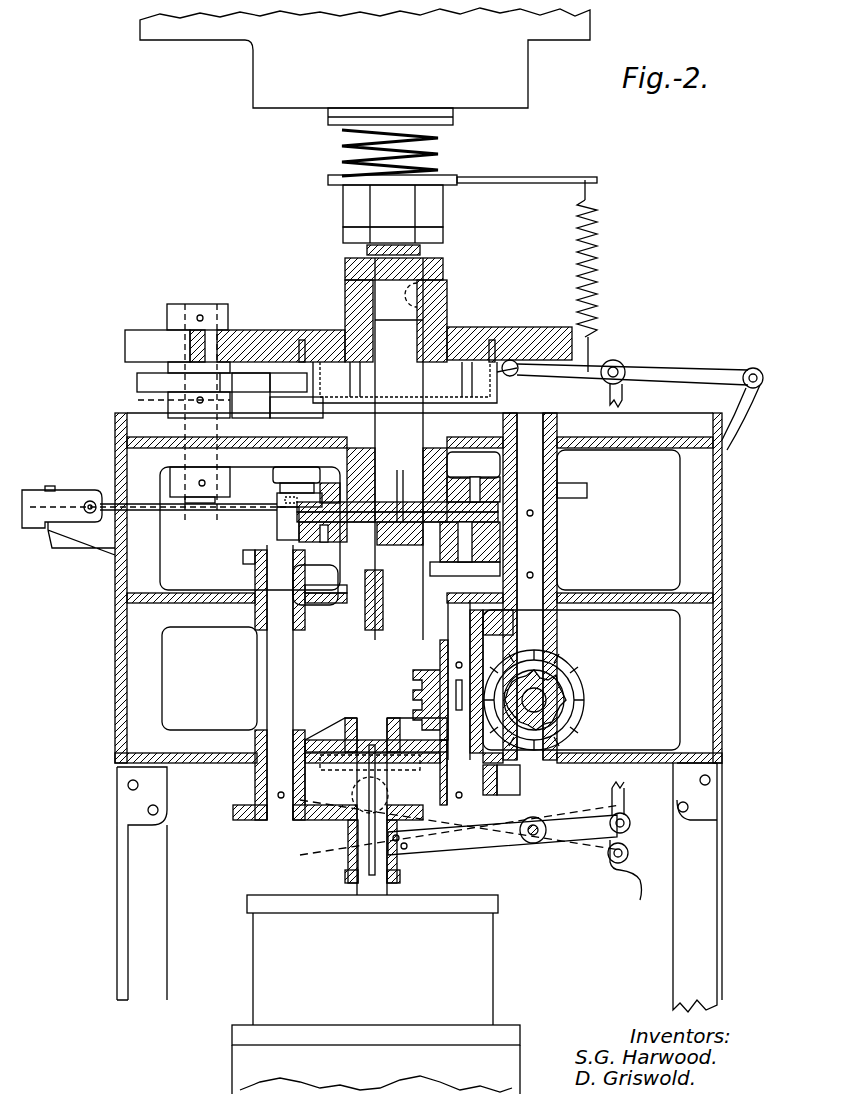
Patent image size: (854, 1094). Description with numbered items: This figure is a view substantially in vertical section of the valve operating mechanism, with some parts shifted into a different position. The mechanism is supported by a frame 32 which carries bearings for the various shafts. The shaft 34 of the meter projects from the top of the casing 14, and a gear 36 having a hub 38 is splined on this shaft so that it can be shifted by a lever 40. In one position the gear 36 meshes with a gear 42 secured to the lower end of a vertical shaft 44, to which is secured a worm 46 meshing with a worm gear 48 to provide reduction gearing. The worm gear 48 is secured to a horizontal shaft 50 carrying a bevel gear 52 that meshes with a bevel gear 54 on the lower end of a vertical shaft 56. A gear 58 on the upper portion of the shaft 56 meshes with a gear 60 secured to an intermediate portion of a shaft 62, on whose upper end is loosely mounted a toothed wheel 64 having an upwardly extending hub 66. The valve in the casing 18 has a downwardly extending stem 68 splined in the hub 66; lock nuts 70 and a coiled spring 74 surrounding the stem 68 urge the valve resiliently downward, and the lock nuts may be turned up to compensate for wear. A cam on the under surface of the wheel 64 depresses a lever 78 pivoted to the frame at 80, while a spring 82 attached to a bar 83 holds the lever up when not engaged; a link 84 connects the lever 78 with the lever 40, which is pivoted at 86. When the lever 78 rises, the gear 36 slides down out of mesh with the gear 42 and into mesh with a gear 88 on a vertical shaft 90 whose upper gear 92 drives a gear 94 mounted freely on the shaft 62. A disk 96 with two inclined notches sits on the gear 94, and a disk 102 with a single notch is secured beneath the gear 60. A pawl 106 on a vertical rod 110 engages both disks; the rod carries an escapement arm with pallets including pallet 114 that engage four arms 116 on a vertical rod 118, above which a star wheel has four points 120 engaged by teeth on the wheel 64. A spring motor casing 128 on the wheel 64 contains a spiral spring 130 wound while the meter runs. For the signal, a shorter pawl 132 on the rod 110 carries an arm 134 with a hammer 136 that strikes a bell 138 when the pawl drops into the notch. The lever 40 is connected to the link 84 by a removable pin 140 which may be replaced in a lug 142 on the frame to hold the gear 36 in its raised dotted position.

The casing 14 is at (487, 995).
The valve casing 18 is at (517, 72).
The frame 32 is at (722, 648).
The shaft 34 is at (395, 895).
The gear 36 is at (345, 822).
The hub 38 is at (350, 848).
The lever 40 is at (502, 843).
The gear 42 is at (501, 787).
The vertical shaft 44 is at (448, 647).
The worm 46 is at (415, 690).
The worm gear 48 is at (585, 692).
The horizontal shaft 50 is at (584, 715).
The bevel gear 52 is at (580, 678).
The bevel gear 54 is at (575, 645).
The vertical shaft 56 is at (545, 560).
The gear 58 is at (587, 492).
The gear 60 is at (455, 480).
The shaft 62 is at (410, 432).
The toothed wheel 64 is at (492, 330).
The hub 66 is at (440, 298).
The stem 68 is at (385, 300).
The lock nuts 70 is at (350, 212).
The coiled spring 74 is at (345, 150).
The lever 78 is at (676, 364).
The pivot 80 is at (756, 368).
The spring 82 is at (598, 310).
The bar 83 is at (535, 176).
The link 84 is at (625, 397).
The pivot 86 is at (535, 843).
The gear 88 is at (262, 820).
The vertical shaft 90 is at (275, 705).
The gear 92 is at (243, 563).
The gear 94 is at (352, 580).
The disk 96 is at (500, 535).
The disk 102 is at (500, 527).
The pawl 106 is at (277, 530).
The vertical rod 110 is at (275, 486).
The pallet 114 is at (247, 380).
The arms 116 is at (137, 382).
The vertical rod 118 is at (156, 403).
The points 120 is at (140, 342).
The spring motor casing 128 is at (487, 391).
The spiral spring 130 is at (490, 375).
The pawl 132 is at (277, 512).
The arm 134 is at (190, 510).
The hammer 136 is at (92, 500).
The bell 138 is at (35, 487).
The removable pin 140 is at (630, 823).
The lug 142 is at (655, 860).